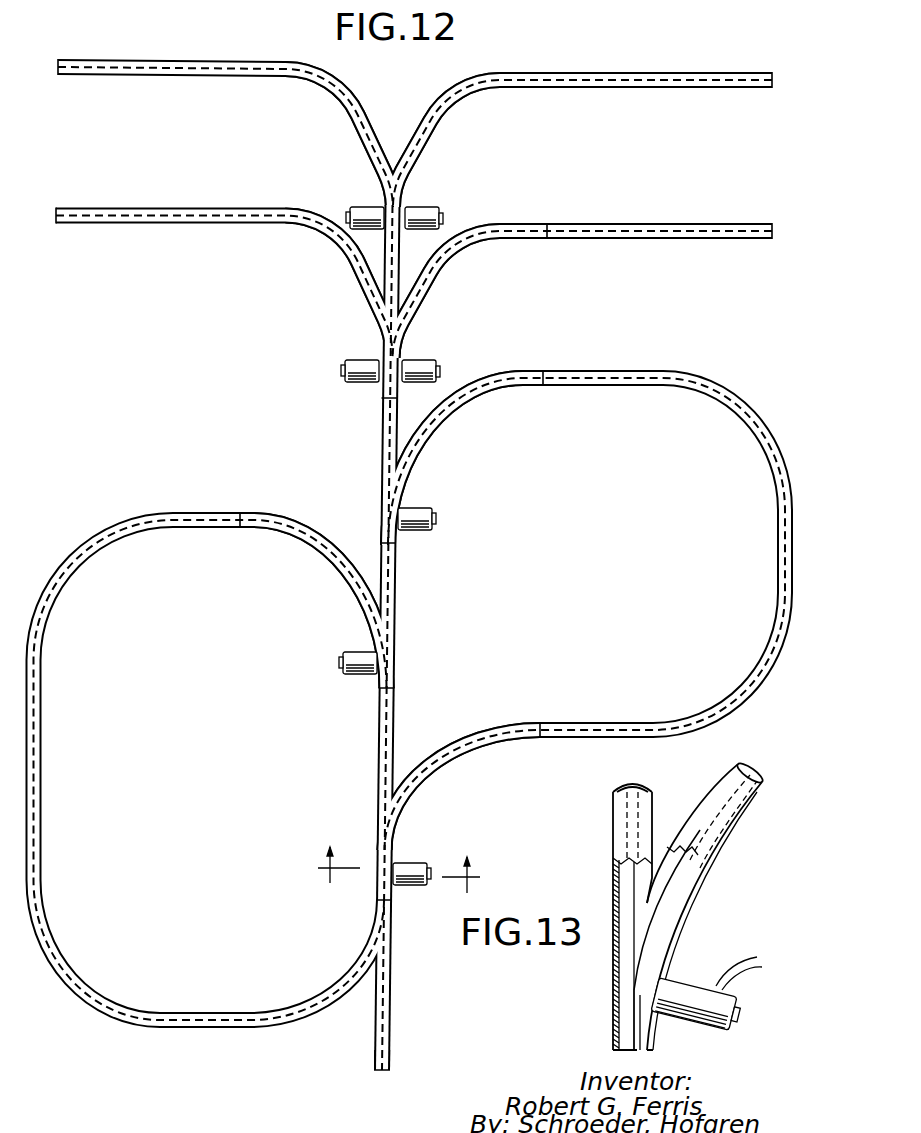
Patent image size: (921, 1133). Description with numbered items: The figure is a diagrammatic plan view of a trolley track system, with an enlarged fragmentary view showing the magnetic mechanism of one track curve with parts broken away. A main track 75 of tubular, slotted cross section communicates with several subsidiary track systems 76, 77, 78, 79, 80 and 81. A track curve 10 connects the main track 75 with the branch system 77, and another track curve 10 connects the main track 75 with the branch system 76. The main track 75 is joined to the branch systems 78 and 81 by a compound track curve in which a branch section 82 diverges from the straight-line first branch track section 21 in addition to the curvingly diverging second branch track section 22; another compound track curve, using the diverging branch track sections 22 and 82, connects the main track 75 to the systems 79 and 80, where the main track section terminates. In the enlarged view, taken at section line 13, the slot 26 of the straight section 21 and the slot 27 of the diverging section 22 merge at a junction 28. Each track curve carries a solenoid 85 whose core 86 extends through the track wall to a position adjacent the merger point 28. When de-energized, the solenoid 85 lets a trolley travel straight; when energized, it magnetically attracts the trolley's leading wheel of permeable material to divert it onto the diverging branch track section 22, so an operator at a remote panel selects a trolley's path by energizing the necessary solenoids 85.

In FIG. 12, the track curve 10 is at (418, 458).
In FIG. 12, the section line 13- 13 is at (394, 870).
In FIG. 12, the first branch track section 21 is at (403, 272).
In FIG. 13, the first branch track section 21 is at (652, 810).
In FIG. 12, the second branch track section 22 is at (422, 161).
In FIG. 13, the second branch track section 22 is at (722, 838).
In FIG. 13, the slot 26 is at (632, 1005).
In FIG. 13, the slot 27 is at (665, 914).
In FIG. 13, the junction 28 is at (620, 974).
In FIG. 12, the main track 75 is at (388, 1045).
In FIG. 12, the branch system 76 is at (118, 522).
In FIG. 12, the branch system 77 is at (690, 385).
In FIG. 12, the branch system 78 is at (143, 210).
In FIG. 12, the branch system 79 is at (172, 62).
In FIG. 12, the branch system 80 is at (692, 73).
In FIG. 12, the branch system 81 is at (640, 222).
In FIG. 12, the branch section 82 is at (373, 163).
In FIG. 12, the solenoid 85 is at (356, 205).
In FIG. 13, the solenoid 85 is at (683, 980).
In FIG. 13, the core 86 is at (740, 1017).